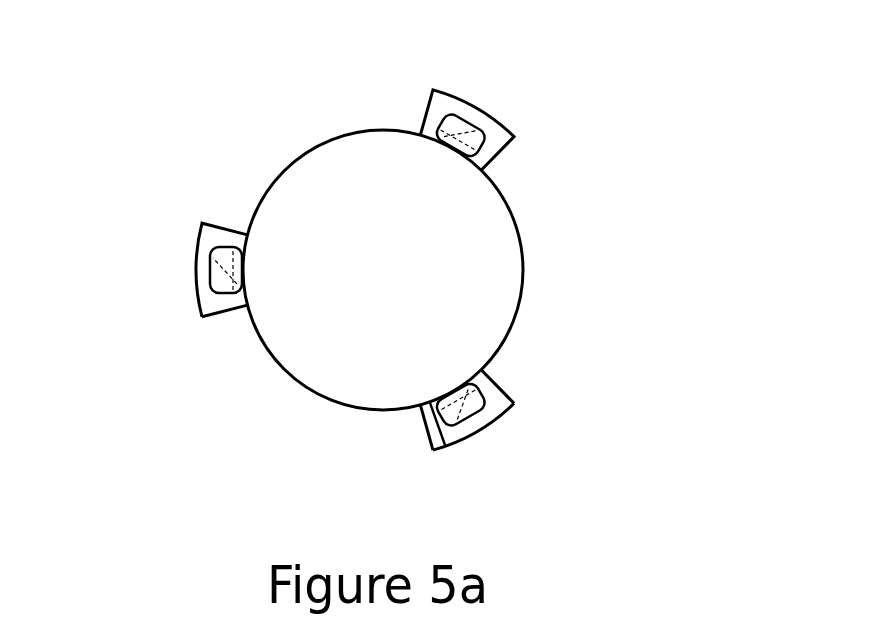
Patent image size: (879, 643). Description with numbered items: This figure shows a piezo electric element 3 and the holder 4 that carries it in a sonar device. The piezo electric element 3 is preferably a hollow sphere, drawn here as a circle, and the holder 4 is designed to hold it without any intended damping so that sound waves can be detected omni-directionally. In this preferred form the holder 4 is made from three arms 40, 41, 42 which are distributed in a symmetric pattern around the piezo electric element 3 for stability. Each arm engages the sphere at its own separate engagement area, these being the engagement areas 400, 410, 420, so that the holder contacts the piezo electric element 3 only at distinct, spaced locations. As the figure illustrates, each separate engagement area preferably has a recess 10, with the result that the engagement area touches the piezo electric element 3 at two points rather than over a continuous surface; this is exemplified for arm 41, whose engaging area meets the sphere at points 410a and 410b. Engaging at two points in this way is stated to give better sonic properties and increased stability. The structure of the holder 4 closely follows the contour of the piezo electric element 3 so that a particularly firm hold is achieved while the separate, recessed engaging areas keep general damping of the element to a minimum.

The piezo electric element 3 is at (573, 213).
The holder 4 is at (252, 155).
The recess 10 is at (460, 403).
The arm 40 is at (433, 420).
The arm 41 is at (207, 298).
The arm 42 is at (497, 135).
The engagement area 400 is at (477, 373).
The engagement area 410 is at (240, 240).
The engaging point 410a is at (477, 373).
The engaging point 410b is at (440, 410).
The engagement area 420 is at (440, 140).